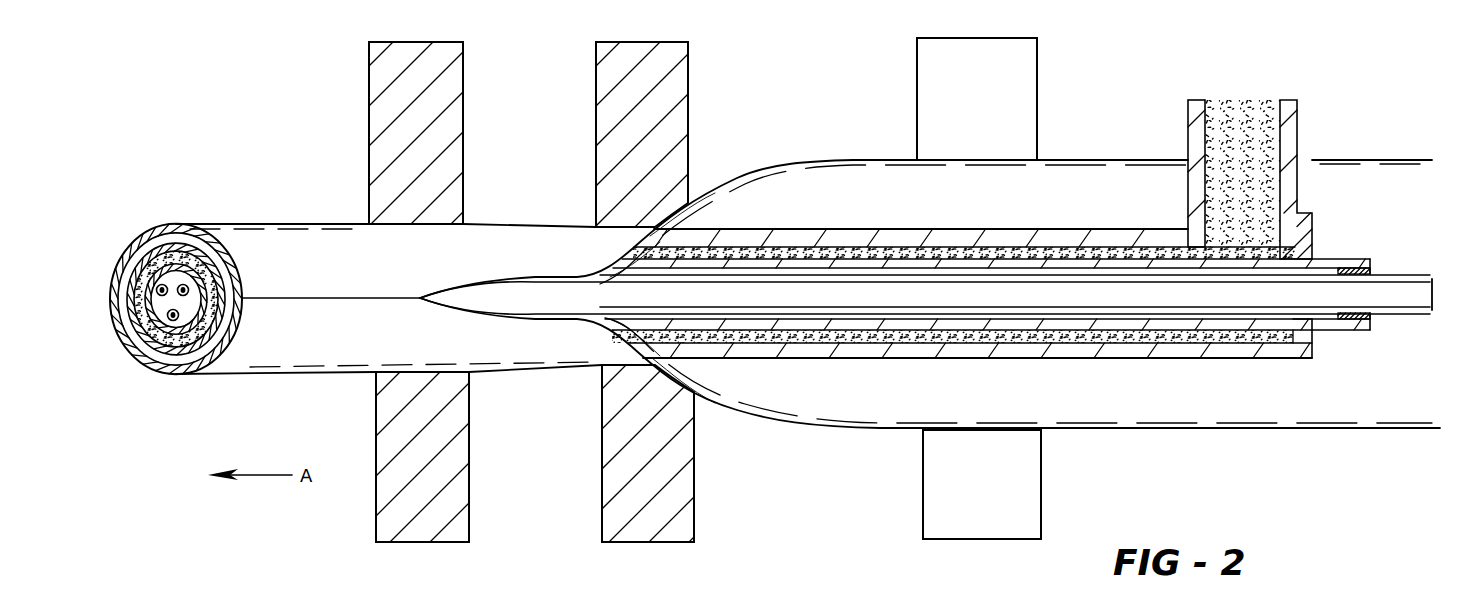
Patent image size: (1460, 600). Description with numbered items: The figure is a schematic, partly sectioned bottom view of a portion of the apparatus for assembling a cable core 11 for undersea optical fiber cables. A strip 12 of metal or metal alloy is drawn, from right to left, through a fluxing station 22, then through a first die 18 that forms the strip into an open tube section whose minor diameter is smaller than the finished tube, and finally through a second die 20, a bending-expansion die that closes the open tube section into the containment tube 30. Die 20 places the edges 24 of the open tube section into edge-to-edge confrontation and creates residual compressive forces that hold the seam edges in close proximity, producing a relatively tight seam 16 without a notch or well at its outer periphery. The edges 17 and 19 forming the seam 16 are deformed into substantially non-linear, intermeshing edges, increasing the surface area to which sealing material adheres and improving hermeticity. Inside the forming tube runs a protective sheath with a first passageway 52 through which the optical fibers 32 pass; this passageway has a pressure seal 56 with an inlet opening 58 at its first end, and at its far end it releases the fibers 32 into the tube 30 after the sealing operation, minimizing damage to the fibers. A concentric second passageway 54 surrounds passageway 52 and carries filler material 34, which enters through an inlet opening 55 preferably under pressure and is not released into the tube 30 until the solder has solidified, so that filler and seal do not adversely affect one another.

The cable core 11 is at (150, 212).
The strip 12 is at (1387, 173).
The seam 16 is at (300, 297).
The edge 17 is at (235, 292).
The first die 18 is at (688, 48).
The edge 19 is at (237, 312).
The second die 20 is at (463, 45).
The fluxing station 22 is at (1037, 60).
The edges of the open tube section 24 is at (803, 416).
The containment tube 30 is at (247, 222).
The optical fibers 32 is at (138, 335).
The filler material 34 is at (207, 343).
The first passageway 52 is at (174, 345).
The second passageway 54 is at (147, 257).
The inlet opening 55 is at (1253, 107).
The pressure seal 56 is at (1373, 268).
The inlet opening 58 is at (1373, 315).